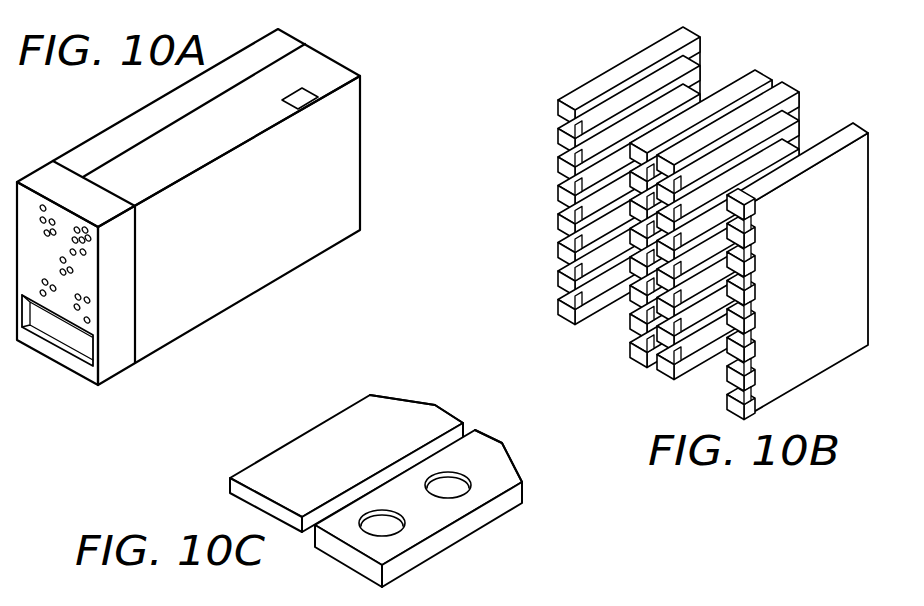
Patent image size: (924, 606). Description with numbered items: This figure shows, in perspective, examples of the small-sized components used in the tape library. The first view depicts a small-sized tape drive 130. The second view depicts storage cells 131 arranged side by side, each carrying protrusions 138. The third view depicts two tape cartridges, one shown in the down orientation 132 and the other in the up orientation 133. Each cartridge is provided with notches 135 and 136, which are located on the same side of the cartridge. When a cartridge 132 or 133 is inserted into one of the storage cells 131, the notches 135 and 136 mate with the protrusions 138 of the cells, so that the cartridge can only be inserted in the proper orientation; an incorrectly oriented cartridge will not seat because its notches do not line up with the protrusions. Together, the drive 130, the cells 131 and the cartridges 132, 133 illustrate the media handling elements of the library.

In FIG. 10A, the tape drive 130 is at (320, 247).
In FIG. 10B, the storage cell 131 is at (836, 357).
In FIG. 10C, the tape cartridge (down orientation) 132 is at (487, 483).
In FIG. 10C, the tape cartridge (up orientation) 133 is at (320, 433).
In FIG. 10C, the notch 135 is at (517, 462).
In FIG. 10C, the notch 136 is at (402, 398).
In FIG. 10B, the protrusion 138 is at (693, 59).